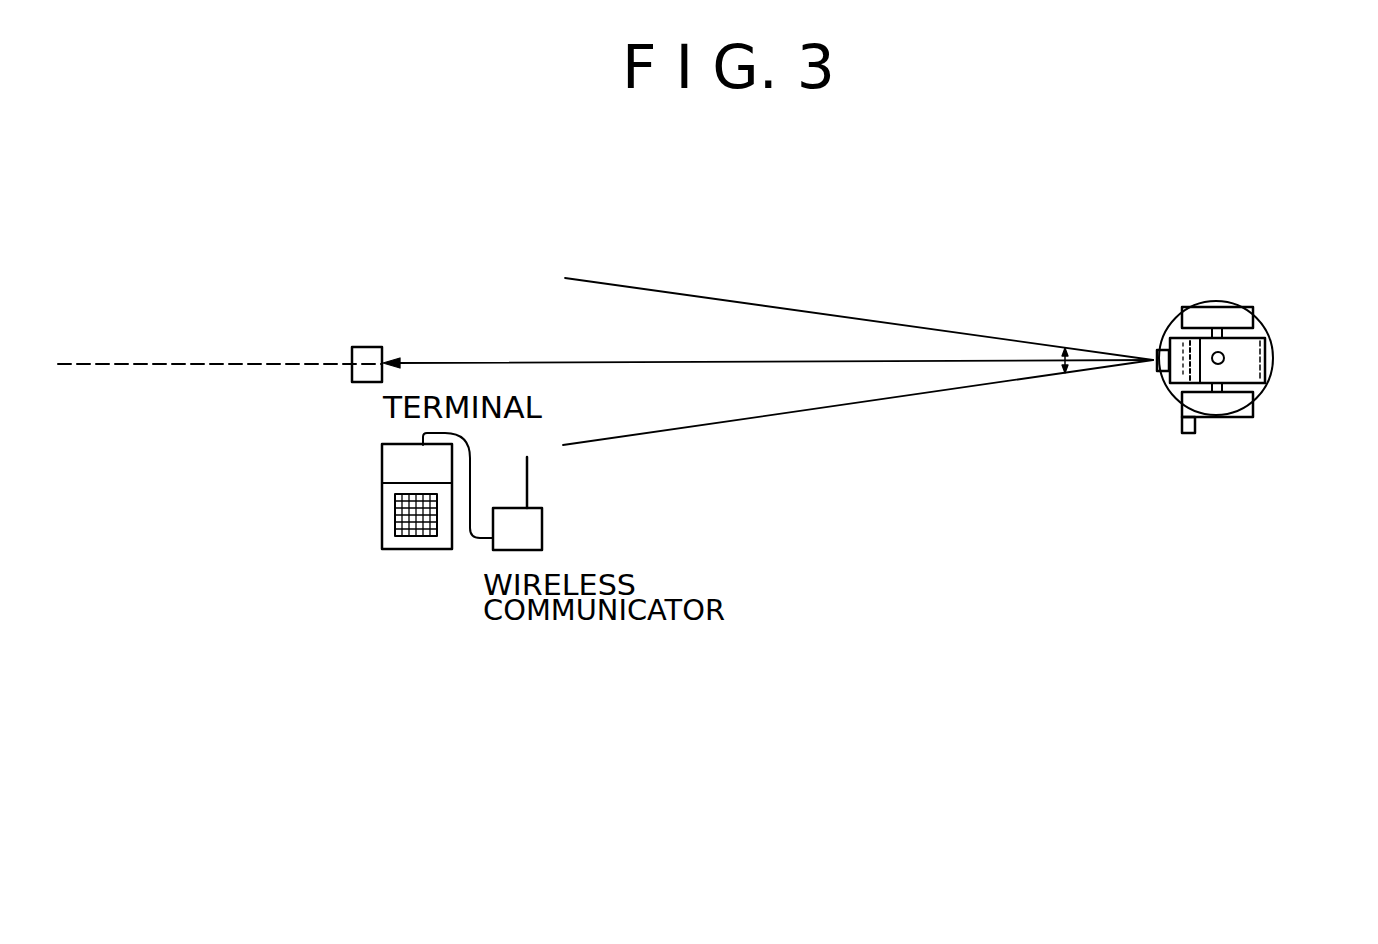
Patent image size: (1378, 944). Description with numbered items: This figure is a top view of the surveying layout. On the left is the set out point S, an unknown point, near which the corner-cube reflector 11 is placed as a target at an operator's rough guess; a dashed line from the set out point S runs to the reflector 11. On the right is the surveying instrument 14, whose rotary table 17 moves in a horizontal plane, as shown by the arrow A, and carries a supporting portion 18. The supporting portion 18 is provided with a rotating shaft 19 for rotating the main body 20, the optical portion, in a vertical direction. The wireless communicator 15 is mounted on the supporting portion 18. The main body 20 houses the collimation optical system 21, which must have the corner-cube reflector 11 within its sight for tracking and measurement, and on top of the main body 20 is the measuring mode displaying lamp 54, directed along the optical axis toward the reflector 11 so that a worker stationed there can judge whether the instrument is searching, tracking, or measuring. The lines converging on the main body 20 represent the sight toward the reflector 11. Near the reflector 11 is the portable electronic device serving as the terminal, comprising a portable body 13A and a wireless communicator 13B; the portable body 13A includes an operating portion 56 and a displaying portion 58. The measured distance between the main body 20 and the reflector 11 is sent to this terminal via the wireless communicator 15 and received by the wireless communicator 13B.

The corner-cube reflector 11 is at (365, 347).
The portable body 13A is at (369, 518).
The wireless communicator 13B is at (535, 530).
The surveying instrument 14 is at (1235, 356).
The wireless communicator 15 is at (1188, 434).
The rotary table 17 is at (1267, 339).
The supporting portion 18 is at (1217, 307).
The rotating shaft 19 is at (1227, 335).
The main body 20 is at (1258, 375).
The collimation optical system 21 is at (1162, 375).
The measuring mode displaying lamp 54 is at (1225, 358).
The operating portion 56 is at (395, 465).
The displaying portion 58 is at (407, 537).
The set out point S is at (211, 226).
The arrow A is at (1128, 323).